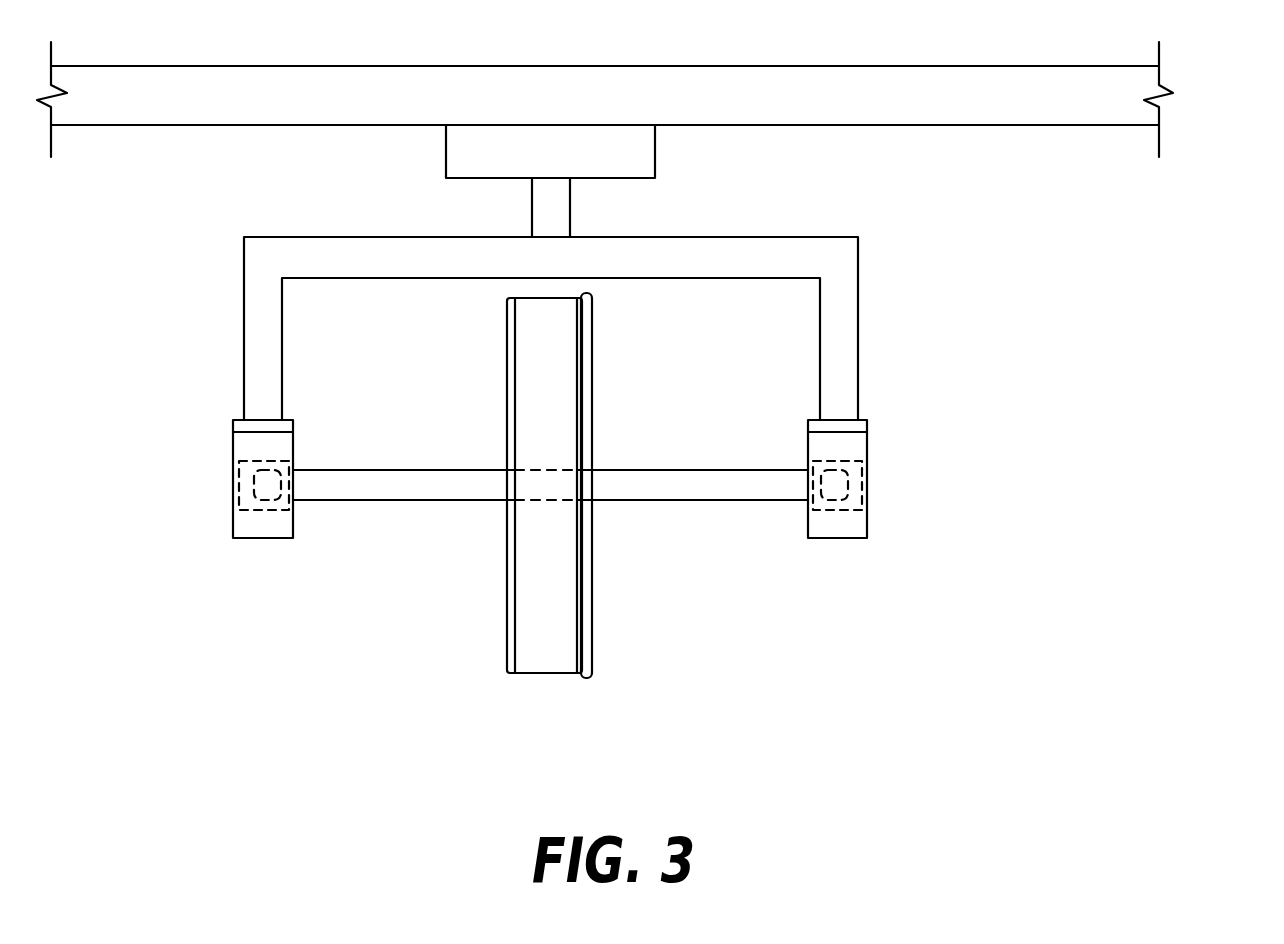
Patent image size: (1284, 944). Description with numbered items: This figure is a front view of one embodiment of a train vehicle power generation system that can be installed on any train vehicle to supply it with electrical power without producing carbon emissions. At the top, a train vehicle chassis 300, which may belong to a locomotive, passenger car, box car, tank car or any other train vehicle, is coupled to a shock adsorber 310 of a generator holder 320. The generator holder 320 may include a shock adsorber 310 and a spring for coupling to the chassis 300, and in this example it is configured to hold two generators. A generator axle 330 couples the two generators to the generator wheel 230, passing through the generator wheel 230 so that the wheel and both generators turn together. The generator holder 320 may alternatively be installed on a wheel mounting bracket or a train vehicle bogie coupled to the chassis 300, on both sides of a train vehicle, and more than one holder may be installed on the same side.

The train vehicle chassis 300 is at (1148, 118).
The shock adsorber 310 is at (655, 165).
The generator holder 320 is at (780, 237).
The generator axle 330 is at (402, 500).
The generator wheel 230 is at (548, 673).